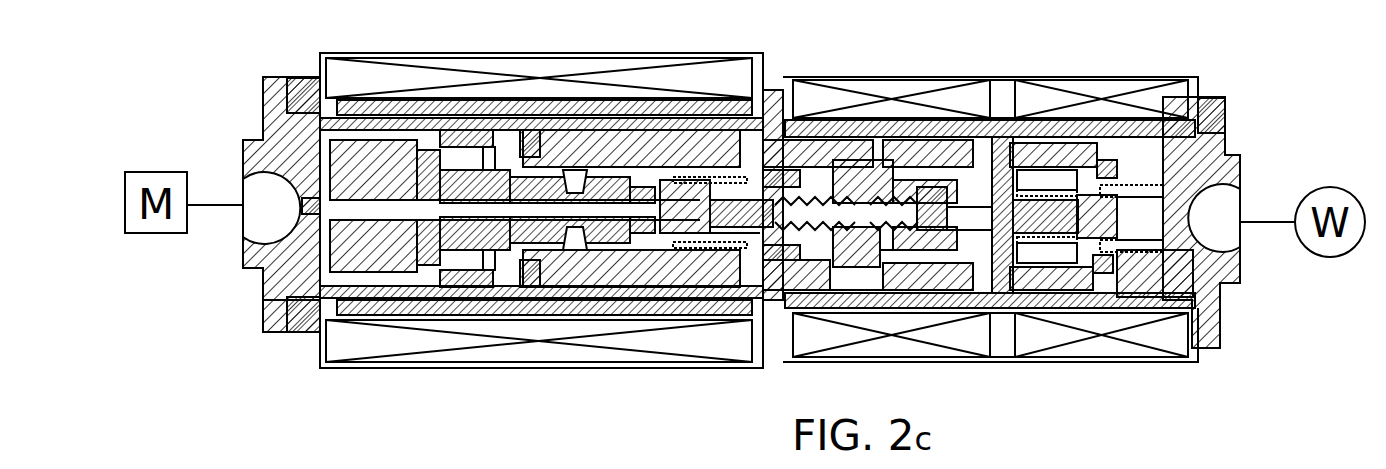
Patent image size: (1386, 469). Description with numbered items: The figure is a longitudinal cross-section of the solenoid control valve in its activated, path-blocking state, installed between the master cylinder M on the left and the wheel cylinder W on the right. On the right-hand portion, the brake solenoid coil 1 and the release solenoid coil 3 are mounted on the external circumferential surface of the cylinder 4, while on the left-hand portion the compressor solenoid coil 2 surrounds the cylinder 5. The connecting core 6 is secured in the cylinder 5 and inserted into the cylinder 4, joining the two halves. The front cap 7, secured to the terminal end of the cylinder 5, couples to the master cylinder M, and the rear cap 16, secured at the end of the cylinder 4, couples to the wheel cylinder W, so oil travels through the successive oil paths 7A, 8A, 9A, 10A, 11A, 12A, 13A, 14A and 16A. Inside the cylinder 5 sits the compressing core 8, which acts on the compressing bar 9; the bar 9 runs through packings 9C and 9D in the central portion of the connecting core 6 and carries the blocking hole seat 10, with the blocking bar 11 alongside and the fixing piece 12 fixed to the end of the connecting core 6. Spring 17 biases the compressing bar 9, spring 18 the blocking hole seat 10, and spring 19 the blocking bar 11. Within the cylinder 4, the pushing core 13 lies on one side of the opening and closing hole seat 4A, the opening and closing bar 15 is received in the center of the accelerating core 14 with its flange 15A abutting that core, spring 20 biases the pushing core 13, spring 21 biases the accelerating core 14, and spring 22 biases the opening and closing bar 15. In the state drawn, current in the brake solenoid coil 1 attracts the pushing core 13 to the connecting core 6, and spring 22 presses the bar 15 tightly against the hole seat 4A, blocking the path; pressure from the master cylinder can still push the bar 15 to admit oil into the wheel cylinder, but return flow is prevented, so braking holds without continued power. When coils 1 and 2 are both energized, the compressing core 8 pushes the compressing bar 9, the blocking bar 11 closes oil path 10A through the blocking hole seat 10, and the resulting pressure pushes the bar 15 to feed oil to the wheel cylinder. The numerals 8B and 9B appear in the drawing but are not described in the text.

The brake solenoid coil 1 is at (773, 357).
The compressor solenoid coil 2 is at (340, 343).
The release solenoid coil 3 is at (962, 358).
The cylinder 4 is at (1087, 302).
The opening and closing hole seat 4A is at (1015, 332).
The cylinder 5 is at (265, 317).
The connecting core 6 is at (593, 287).
The front cap 7 is at (275, 117).
The oil path 7A is at (300, 207).
The compressing core 8 is at (343, 150).
The oil path 8A is at (380, 140).
The rotor bore 8B is at (378, 207).
The compressing bar 9 is at (450, 198).
The oil path 9A is at (483, 205).
The sleeve flange 9B is at (507, 170).
The packing 9C is at (577, 170).
The packing 9D is at (627, 173).
The blocking hole seat 10 is at (653, 207).
The oil path 10A is at (677, 210).
The blocking bar 11 is at (733, 210).
The oil path 11A is at (783, 183).
The fixing piece 12 is at (850, 187).
The oil path 12A is at (867, 180).
The pushing core 13 is at (923, 157).
The oil path 13A is at (950, 173).
The accelerating core 14 is at (1040, 153).
The oil path 14A is at (1057, 177).
The opening and closing bar 15 is at (1102, 180).
The flange 15A is at (1150, 182).
The rear cap 16 is at (1220, 130).
The oil path 16A is at (1180, 220).
The spring 17 is at (485, 250).
The spring 18 is at (717, 237).
The spring 19 is at (822, 257).
The spring 20 is at (900, 263).
The spring 21 is at (1108, 300).
The spring 22 is at (1150, 257).